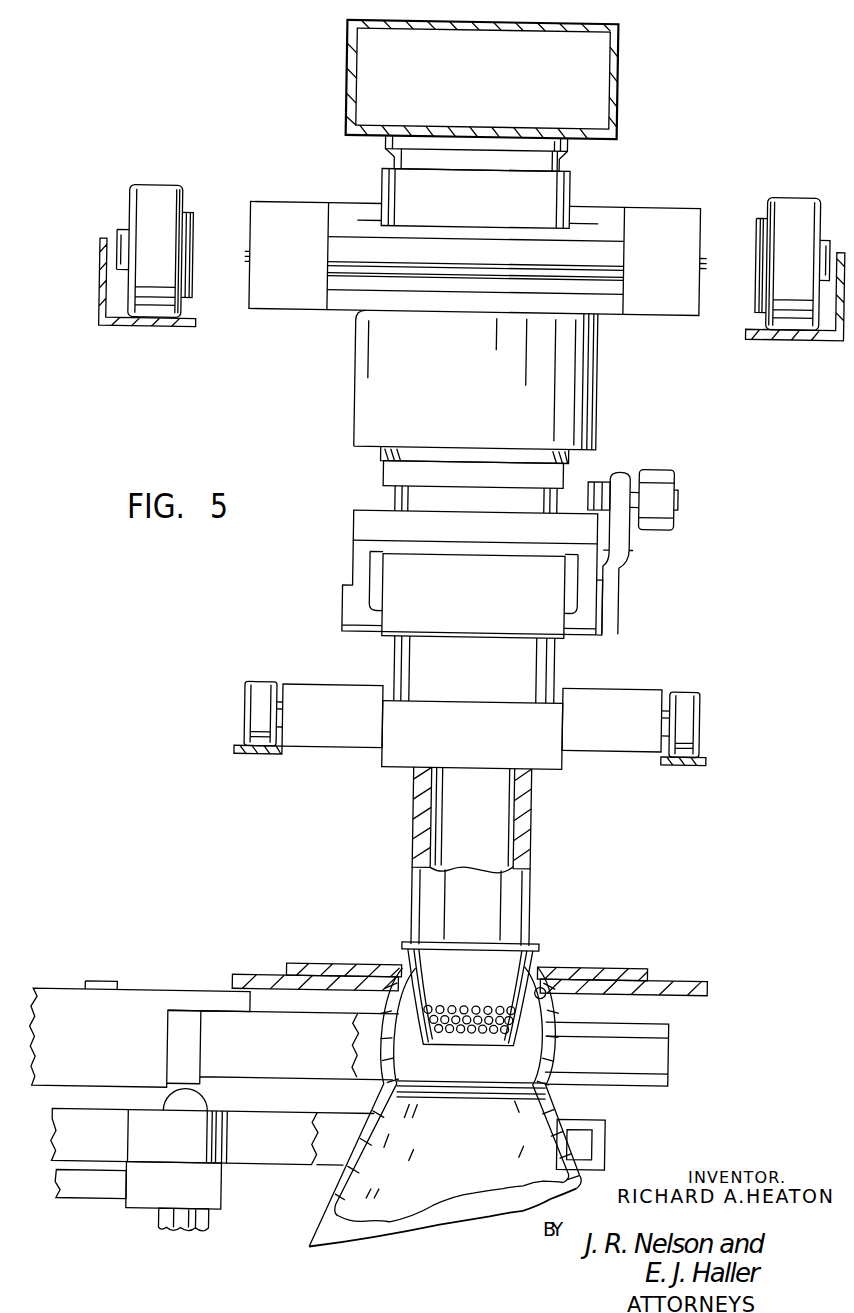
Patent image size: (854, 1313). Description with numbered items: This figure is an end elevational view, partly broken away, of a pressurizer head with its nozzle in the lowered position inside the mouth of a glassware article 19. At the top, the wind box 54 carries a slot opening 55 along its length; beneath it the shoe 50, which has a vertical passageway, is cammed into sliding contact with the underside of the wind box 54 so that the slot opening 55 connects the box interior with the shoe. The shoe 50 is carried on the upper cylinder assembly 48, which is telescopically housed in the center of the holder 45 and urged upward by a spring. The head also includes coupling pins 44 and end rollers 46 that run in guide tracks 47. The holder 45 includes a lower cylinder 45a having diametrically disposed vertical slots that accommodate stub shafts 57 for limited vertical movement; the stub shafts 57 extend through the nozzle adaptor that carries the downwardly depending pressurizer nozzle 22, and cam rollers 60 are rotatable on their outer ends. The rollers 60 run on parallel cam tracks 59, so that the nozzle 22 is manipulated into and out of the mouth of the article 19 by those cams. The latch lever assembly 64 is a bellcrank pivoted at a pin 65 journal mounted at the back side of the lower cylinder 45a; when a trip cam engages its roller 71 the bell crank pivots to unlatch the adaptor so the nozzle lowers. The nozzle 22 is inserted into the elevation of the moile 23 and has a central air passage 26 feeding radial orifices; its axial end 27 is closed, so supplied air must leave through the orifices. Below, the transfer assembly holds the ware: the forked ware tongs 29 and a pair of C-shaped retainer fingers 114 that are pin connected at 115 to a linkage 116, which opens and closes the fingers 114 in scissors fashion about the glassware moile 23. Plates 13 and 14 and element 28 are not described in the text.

The plate 13 is at (628, 966).
The plate 14 is at (698, 978).
The article 19 is at (436, 1226).
The pressurizer nozzle 22 is at (482, 989).
The moile 23 is at (556, 1106).
The central air passage 26 is at (492, 835).
The axial end 27 is at (478, 1036).
The seal ring 28 is at (550, 1004).
The ware tongs 29 is at (99, 1060).
The coupling pins 44 is at (476, 264).
The holder 45 is at (666, 266).
The lower cylinder 45a is at (492, 510).
The end rollers 46 is at (152, 197).
The guide tracks 47 is at (126, 332).
The upper cylinder assembly 48 is at (475, 207).
The shoe 50 is at (480, 140).
The wind box 54 is at (608, 80).
The slot opening 55 is at (439, 128).
The stub shafts 57 is at (346, 731).
The parallel cam tracks 59 is at (250, 758).
The cam rollers 60 is at (260, 692).
The latch lever assembly 64 is at (629, 569).
The pin 65 is at (600, 626).
The roller 71 is at (666, 480).
The retainer fingers 114 is at (262, 1132).
The pin connection 115 is at (190, 1236).
The linkage 116 is at (96, 1200).